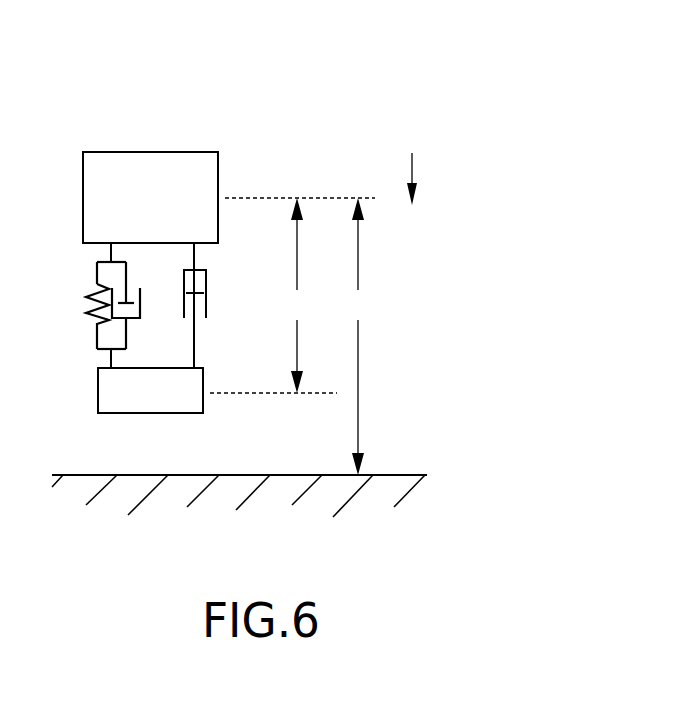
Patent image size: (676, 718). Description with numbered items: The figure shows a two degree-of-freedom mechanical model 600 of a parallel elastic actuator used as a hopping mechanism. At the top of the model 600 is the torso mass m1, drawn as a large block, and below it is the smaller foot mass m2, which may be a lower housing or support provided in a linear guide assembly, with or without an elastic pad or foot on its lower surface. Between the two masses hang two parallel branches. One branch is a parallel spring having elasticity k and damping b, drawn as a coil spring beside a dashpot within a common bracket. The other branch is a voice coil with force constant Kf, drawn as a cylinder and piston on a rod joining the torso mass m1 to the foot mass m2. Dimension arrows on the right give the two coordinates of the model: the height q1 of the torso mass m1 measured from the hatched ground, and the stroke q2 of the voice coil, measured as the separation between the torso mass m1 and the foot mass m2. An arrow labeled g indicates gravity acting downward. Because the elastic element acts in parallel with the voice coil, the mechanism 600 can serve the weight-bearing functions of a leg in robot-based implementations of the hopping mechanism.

The mechanical model 600 is at (289, 273).
The torso mass m1 is at (150, 197).
The foot mass m2 is at (150, 390).
The spring elasticity k is at (86, 304).
The damping b is at (136, 303).
The force constant Kf is at (210, 296).
The height q1 is at (359, 336).
The stroke q2 is at (295, 295).
The gravity g is at (425, 179).